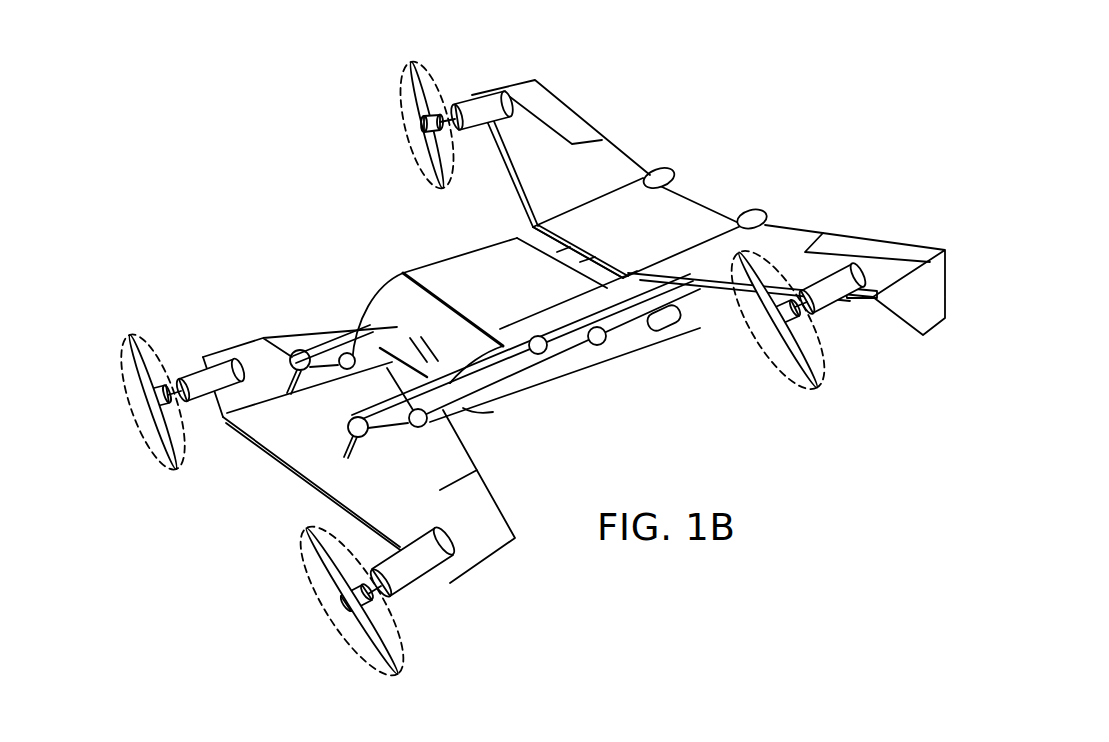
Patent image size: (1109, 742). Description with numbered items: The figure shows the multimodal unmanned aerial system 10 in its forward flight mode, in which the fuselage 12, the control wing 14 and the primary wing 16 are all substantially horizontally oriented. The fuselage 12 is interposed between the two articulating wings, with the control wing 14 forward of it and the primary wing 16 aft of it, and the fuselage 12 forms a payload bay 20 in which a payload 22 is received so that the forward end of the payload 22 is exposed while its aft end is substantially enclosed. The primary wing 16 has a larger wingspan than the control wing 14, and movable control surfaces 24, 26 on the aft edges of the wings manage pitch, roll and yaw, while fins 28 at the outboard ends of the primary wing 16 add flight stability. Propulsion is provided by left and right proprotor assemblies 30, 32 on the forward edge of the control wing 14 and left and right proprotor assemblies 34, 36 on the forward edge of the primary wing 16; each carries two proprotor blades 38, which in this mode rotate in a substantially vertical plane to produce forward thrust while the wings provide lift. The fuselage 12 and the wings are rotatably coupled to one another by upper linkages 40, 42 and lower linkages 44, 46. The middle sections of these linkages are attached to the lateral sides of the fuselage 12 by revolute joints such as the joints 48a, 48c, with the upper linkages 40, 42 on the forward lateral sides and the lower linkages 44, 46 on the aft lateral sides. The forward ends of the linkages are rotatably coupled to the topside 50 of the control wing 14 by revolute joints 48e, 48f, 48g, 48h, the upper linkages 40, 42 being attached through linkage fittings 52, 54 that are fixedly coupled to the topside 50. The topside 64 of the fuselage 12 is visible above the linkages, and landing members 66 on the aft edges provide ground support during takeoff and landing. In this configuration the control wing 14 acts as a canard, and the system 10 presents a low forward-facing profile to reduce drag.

The multimodal unmanned aerial system 10 is at (738, 118).
The fuselage 12 is at (658, 342).
The control wing 14 is at (247, 437).
The primary wing 16 is at (698, 210).
The payload bay 20 is at (543, 384).
The payload 22 is at (494, 413).
The movable control surface 24 is at (258, 345).
The movable control surface 26 is at (553, 103).
The fin 28 is at (928, 318).
The left proprotor assembly 30 is at (411, 588).
The right proprotor assembly 32 is at (192, 372).
The left proprotor assembly 34 is at (830, 305).
The right proprotor assembly 36 is at (464, 98).
The proprotor blade 38 is at (137, 369).
The upper linkage 40 is at (450, 383).
The upper linkage 42 is at (336, 341).
The lower linkage 44 is at (545, 360).
The lower linkage 46 is at (385, 335).
The revolute joint 48a is at (530, 337).
The revolute joint 48c is at (606, 343).
The revolute joint 48e is at (347, 426).
The revolute joint 48f is at (297, 350).
The revolute joint 48g is at (419, 430).
The revolute joint 48h is at (350, 353).
The topside of control wing 50 is at (293, 468).
The linkage fitting 52 is at (377, 448).
The linkage fitting 54 is at (292, 350).
The topside of fuselage 64 is at (503, 250).
The landing member 66 is at (760, 210).